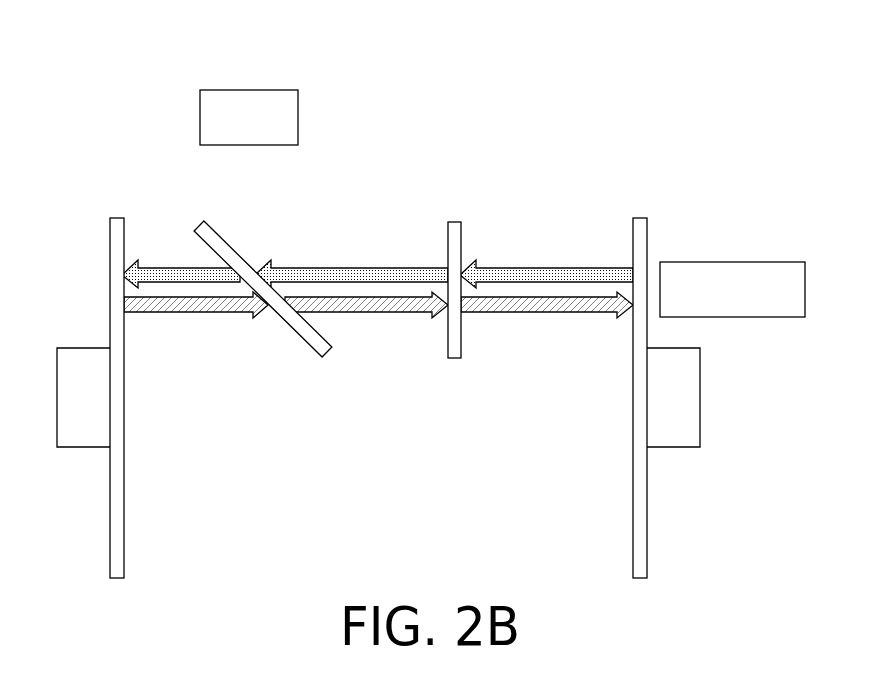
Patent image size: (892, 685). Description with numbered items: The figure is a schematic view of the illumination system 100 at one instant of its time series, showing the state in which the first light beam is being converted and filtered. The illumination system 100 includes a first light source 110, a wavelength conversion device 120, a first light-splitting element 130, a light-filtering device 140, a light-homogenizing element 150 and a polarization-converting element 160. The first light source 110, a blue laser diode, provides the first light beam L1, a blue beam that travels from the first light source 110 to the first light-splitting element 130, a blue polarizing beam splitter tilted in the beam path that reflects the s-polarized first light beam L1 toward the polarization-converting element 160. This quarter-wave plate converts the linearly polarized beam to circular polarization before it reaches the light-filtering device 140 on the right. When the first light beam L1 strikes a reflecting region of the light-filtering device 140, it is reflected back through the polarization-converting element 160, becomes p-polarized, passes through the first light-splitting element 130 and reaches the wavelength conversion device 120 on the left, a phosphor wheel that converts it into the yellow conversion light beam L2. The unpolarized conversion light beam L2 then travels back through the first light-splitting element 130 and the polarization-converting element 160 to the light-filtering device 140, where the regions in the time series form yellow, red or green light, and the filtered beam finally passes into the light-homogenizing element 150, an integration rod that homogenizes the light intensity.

The illumination system 100 is at (815, 602).
The first light source 110 is at (250, 105).
The wavelength conversion device 120 is at (82, 430).
The first light-splitting element 130 is at (201, 228).
The light-filtering device 140 is at (675, 430).
The light-homogenizing element 150 is at (737, 277).
The polarization-converting element 160 is at (453, 235).
The first light beam L1 is at (553, 272).
The conversion light beam L2 is at (551, 310).